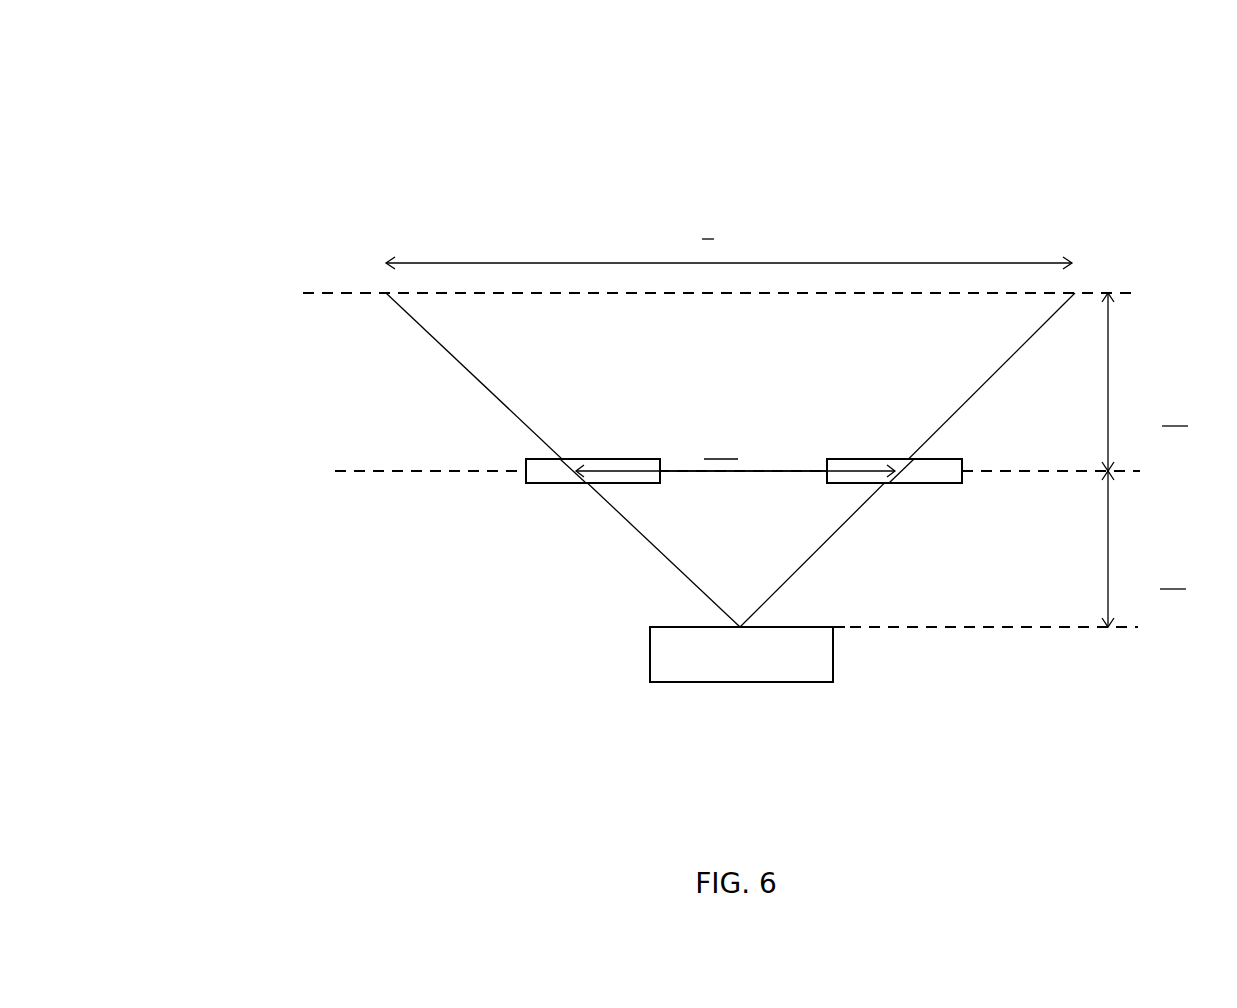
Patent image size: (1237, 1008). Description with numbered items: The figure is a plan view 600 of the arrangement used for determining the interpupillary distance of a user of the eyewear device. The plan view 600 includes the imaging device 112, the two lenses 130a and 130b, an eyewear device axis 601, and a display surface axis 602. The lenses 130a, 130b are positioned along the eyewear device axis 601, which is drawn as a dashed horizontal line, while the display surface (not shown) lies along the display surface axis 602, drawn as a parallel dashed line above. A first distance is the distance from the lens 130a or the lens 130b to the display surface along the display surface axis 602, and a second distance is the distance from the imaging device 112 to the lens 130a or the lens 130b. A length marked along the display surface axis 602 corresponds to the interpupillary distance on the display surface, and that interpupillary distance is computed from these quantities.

The plan view 600 is at (240, 63).
The display surface axis 602 is at (224, 360).
The eyewear device axis 601 is at (256, 506).
The lens 130b is at (526, 483).
The lens 130a is at (962, 483).
The imaging device 112 is at (650, 655).